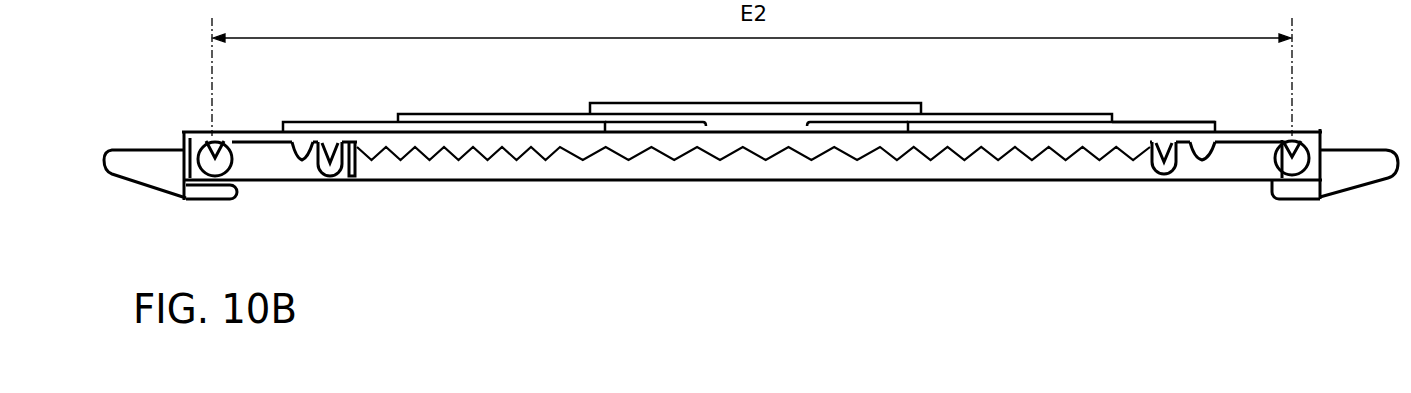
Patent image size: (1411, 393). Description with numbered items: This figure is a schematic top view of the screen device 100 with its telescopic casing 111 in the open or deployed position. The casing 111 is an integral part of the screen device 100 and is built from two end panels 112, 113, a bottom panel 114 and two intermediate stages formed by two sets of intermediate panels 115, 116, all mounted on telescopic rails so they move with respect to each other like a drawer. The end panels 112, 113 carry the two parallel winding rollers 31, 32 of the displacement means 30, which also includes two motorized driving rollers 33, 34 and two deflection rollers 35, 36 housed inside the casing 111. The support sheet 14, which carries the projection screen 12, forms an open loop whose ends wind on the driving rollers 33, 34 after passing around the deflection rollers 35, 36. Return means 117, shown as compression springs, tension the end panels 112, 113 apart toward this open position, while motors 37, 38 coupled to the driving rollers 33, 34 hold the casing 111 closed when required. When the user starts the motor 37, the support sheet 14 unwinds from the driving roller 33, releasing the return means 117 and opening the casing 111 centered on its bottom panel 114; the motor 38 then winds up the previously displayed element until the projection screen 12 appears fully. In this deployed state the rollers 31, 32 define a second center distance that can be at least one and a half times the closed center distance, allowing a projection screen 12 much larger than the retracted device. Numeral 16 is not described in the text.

The screen device 100 is at (752, 227).
The projection screen 12 is at (752, 181).
The support sheet 14 is at (912, 178).
The right flange 16 is at (1347, 182).
The end panel 112 is at (180, 148).
The winding roller 31 is at (243, 190).
The winding roller 32 is at (1272, 184).
The casing 111 is at (203, 130).
The end panel 113 is at (1306, 127).
The displacement means 30 is at (1202, 167).
The driving roller 33 is at (340, 188).
The motor 37 is at (330, 159).
The driving roller 34 is at (1195, 151).
The motor 38 is at (1163, 180).
The return means 117 is at (573, 150).
The deflection roller 35 is at (283, 128).
The deflection roller 36 is at (1237, 126).
The bottom panel 114 is at (805, 99).
The intermediate panel 115 is at (960, 101).
The intermediate panel 116 is at (1148, 120).